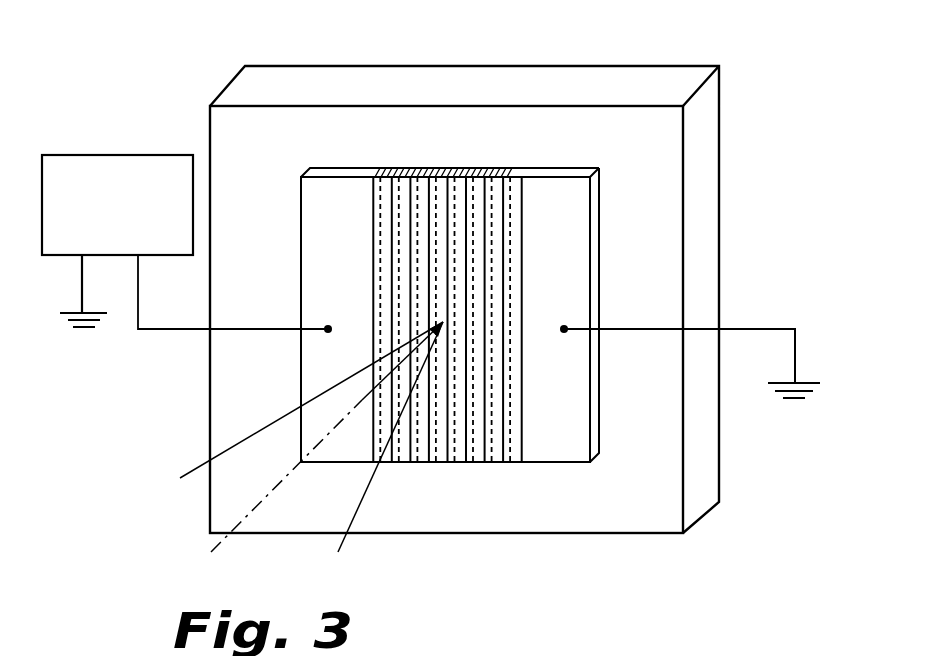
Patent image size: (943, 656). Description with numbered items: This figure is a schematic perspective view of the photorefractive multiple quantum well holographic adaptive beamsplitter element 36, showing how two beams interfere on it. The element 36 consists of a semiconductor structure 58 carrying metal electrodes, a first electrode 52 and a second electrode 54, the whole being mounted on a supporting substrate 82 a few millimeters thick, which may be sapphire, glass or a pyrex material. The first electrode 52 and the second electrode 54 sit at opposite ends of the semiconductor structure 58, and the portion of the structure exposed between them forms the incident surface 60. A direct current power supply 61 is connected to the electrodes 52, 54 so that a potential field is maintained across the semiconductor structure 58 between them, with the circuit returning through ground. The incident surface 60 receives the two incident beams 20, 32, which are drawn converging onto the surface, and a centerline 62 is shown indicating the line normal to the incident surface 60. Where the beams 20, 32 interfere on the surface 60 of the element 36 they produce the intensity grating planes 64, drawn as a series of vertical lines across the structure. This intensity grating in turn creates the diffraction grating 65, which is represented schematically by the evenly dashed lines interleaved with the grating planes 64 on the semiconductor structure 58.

The holographic adaptive beamsplitter element 36 is at (316, 50).
The first electrode 52 is at (330, 197).
The second electrode 54 is at (572, 208).
The semiconductor structure 58 is at (552, 175).
The intensity grating planes 64 is at (490, 430).
The diffraction grating 65 is at (490, 409).
The incident surface 60 is at (521, 462).
The incident beam 32 is at (287, 417).
The incident beam 20 is at (360, 507).
The centerline 62 is at (280, 487).
The direct current power supply 61 is at (137, 155).
The supporting substrate 82 is at (707, 298).